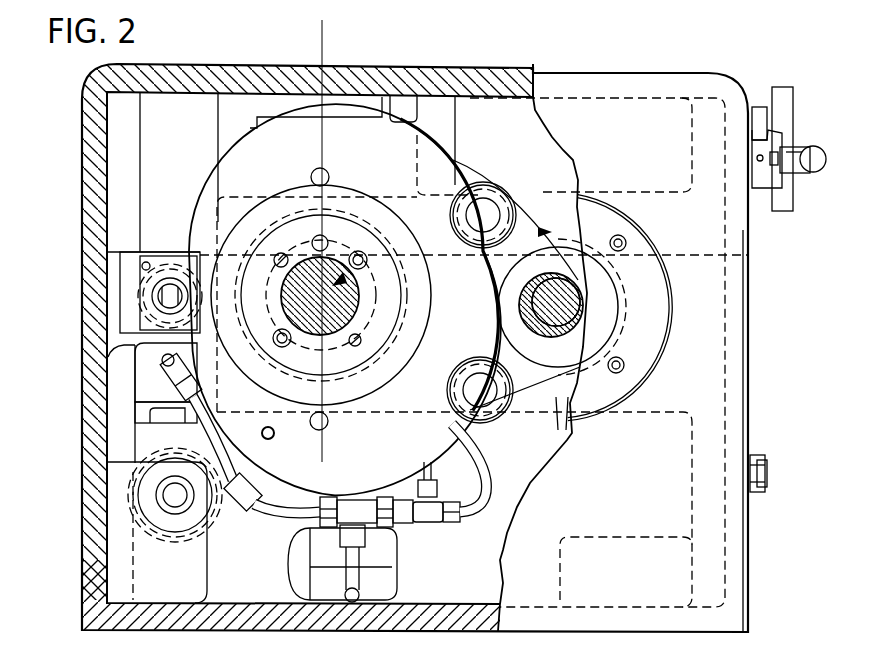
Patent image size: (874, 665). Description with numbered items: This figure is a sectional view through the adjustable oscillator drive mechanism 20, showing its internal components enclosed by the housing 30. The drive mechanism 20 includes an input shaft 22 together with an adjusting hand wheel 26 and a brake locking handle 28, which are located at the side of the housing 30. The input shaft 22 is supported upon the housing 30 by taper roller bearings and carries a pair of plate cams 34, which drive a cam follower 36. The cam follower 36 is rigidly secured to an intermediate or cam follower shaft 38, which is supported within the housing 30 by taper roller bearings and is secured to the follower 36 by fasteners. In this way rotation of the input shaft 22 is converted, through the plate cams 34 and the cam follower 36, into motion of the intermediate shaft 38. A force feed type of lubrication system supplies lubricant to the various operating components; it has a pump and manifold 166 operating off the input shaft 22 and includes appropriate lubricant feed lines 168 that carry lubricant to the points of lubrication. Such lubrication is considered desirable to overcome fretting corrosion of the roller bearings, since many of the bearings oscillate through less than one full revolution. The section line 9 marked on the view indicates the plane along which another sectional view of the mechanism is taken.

The section line 9- 9 is at (355, 35).
The drive mechanism 20 is at (754, 366).
The input shaft 22 is at (283, 292).
The adjusting hand wheel 26 is at (788, 108).
The brake locking handle 28 is at (797, 168).
The housing 30 is at (96, 146).
The plate cams 34 is at (250, 135).
The cam follower 36 is at (552, 360).
The intermediate or cam follower shaft 38 is at (583, 306).
The pump and manifold 166 is at (133, 353).
The lubricant feed lines 168 is at (292, 513).